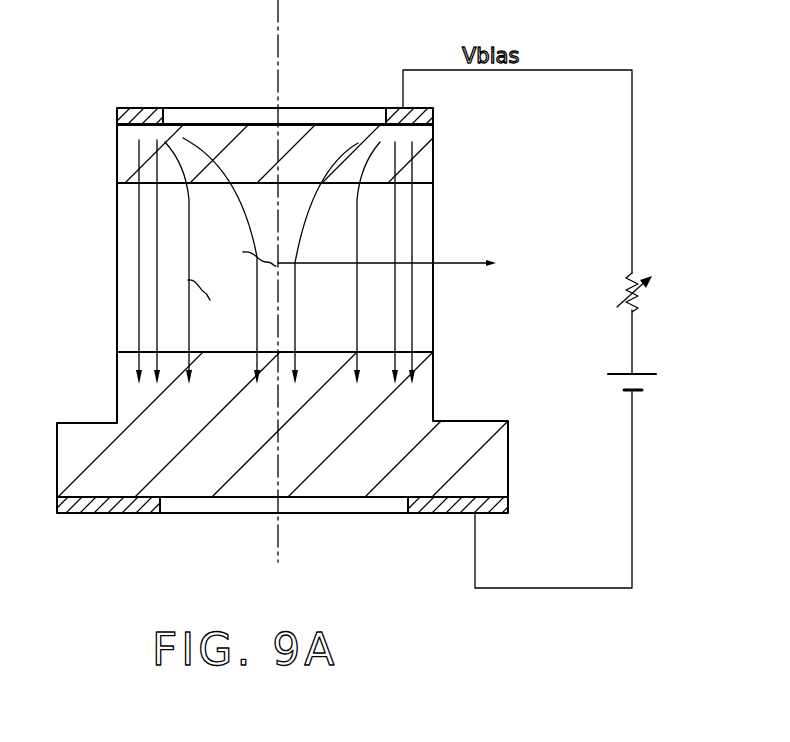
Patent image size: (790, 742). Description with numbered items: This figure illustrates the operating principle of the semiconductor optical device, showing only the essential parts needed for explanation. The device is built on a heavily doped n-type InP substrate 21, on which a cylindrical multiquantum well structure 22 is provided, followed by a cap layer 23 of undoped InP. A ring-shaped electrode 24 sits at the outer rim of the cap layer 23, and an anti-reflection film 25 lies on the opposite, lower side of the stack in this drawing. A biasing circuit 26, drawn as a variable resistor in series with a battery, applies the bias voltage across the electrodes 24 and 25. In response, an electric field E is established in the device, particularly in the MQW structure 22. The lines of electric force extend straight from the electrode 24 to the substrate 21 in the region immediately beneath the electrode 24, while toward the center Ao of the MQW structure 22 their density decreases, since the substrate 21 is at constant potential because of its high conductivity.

The substrate 21 is at (508, 452).
The multiquantum well structure 22 is at (433, 308).
The cap layer 23 is at (423, 157).
The ring-shaped electrode 24 is at (433, 111).
The anti-reflection film 25 is at (508, 505).
The biasing circuit 26 is at (642, 356).